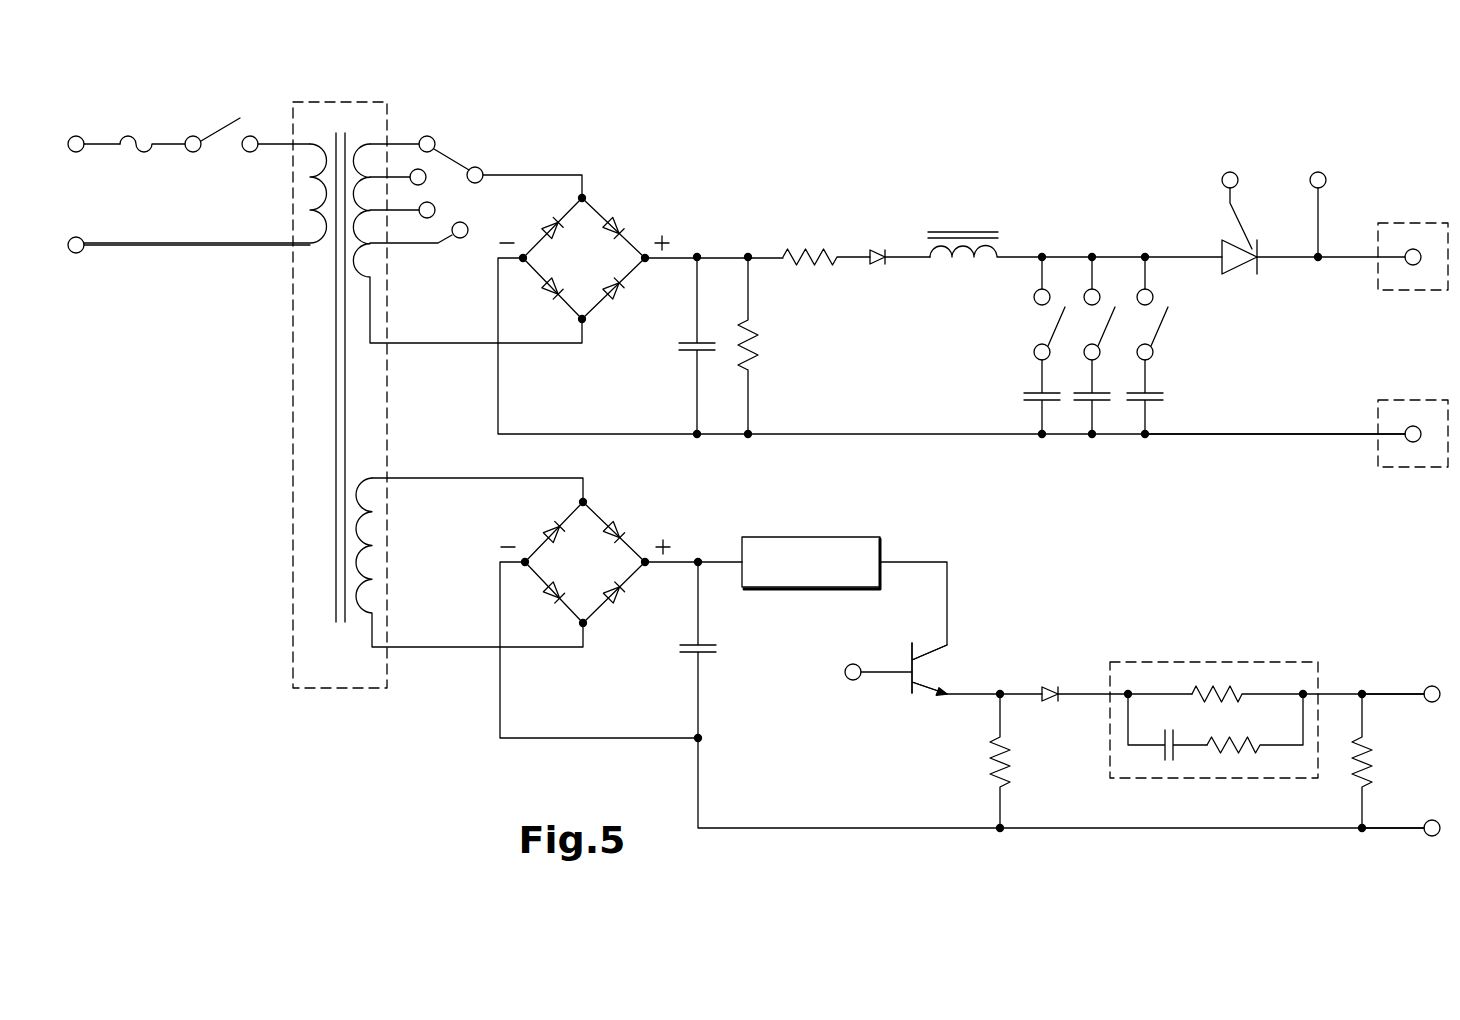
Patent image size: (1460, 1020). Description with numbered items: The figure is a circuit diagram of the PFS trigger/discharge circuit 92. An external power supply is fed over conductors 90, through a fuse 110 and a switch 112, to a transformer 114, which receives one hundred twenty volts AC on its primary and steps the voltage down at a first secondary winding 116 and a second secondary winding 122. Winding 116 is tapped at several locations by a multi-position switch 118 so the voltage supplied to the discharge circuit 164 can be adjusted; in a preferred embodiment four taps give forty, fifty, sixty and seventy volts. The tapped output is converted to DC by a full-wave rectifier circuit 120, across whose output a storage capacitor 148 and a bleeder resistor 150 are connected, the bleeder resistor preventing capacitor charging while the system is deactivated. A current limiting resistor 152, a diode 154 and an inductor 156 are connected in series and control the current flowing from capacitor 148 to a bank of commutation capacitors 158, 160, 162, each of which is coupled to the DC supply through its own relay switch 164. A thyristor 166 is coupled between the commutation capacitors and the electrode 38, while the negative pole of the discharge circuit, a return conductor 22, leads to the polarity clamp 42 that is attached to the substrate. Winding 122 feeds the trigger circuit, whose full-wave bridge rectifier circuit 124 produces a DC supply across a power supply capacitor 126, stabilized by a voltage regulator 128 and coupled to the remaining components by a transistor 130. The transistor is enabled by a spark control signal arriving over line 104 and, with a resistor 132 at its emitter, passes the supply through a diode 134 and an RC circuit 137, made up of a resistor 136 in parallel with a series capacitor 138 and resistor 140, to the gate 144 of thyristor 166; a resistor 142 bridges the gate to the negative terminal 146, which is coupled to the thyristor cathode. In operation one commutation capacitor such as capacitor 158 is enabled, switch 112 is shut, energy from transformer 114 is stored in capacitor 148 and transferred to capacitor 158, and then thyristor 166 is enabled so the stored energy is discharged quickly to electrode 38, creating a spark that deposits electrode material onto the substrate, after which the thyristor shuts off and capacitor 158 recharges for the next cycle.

The conductors 90 is at (80, 152).
The fuse 110 is at (142, 135).
The switch 112 is at (222, 124).
The transformer 114 is at (340, 102).
The first secondary winding 116 is at (436, 126).
The multi-position switch 118 is at (440, 150).
The full-wave rectifier circuit 120 is at (632, 212).
The storage capacitor 148 is at (690, 352).
The bleeder resistor 150 is at (757, 345).
The current limiting resistor 152 is at (805, 247).
The diode 154 is at (878, 248).
The inductor 156 is at (964, 262).
The commutation capacitor 158 is at (1028, 398).
The commutation capacitor 160 is at (1098, 412).
The commutation capacitor 162 is at (1160, 402).
The discharge circuit 164 is at (1106, 284).
The thyristor 166 is at (1237, 272).
The gate 144 is at (1230, 172).
The negative terminal 146 is at (1318, 172).
The electrode 38 is at (1410, 223).
The polarity clamp 42 is at (1413, 400).
The return conductor 22 is at (1313, 436).
The second secondary winding 122 is at (356, 616).
The full-wave bridge rectifier circuit 124 is at (636, 522).
The power supply capacitor 126 is at (690, 655).
The voltage regulator 128 is at (805, 537).
The transistor 130 is at (949, 652).
The line 104 is at (858, 685).
The resistor 132 is at (990, 767).
The diode 134 is at (1052, 706).
The resistor 136 is at (1215, 686).
The RC circuit 137 is at (1267, 706).
The capacitor 138 is at (1160, 758).
The resistor 140 is at (1240, 754).
The resistor 142 is at (1372, 778).
The PFS trigger/discharge circuit 92 is at (355, 770).